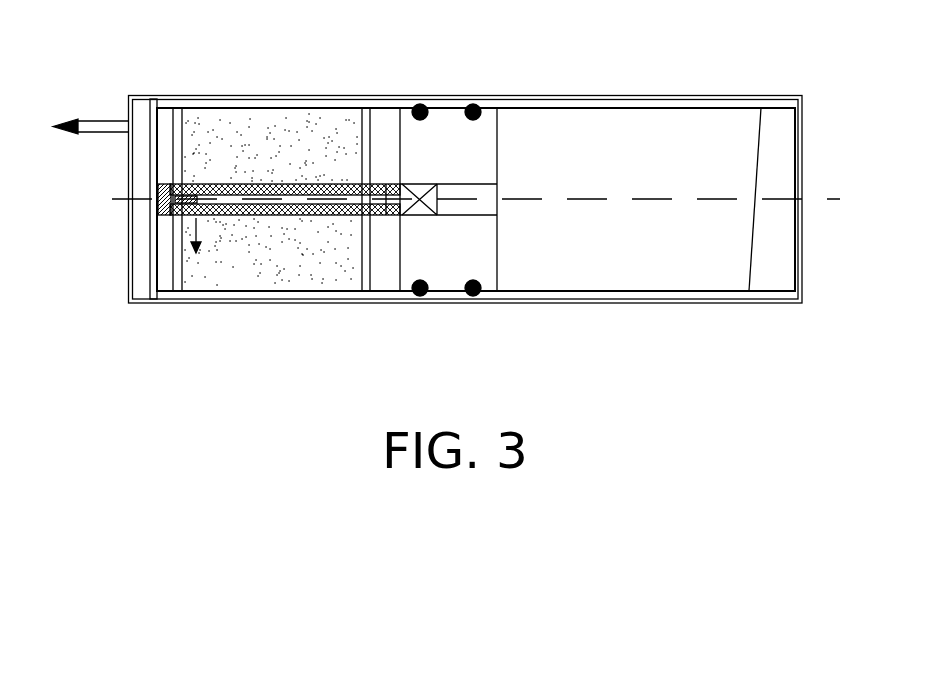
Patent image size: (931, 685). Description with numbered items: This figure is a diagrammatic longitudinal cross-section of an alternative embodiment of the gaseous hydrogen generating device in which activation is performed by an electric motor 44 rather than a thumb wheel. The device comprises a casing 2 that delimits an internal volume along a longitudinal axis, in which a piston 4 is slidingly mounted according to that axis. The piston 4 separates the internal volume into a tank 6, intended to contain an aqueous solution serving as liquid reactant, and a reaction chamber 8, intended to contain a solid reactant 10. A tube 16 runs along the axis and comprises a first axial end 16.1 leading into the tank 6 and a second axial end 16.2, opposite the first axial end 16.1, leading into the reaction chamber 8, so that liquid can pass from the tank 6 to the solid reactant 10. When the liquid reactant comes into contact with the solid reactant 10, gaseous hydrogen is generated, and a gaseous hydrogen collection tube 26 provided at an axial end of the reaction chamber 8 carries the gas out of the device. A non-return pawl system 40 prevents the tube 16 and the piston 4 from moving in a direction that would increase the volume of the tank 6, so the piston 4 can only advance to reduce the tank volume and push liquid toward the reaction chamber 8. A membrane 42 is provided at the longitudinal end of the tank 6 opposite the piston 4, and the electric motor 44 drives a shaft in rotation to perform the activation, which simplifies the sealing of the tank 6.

The casing 2 is at (669, 95).
The piston 4 is at (448, 112).
The tank 6 is at (548, 112).
The reaction chamber 8 is at (166, 110).
The solid reactant 10 is at (232, 270).
The tube 16 is at (287, 183).
The first axial end 16.1 is at (391, 216).
The second axial end 16.2 is at (160, 195).
The gaseous hydrogen collection tube 26 is at (100, 119).
The non-return pawl system 40 is at (176, 249).
The membrane 42 is at (748, 252).
The electric motor 44 is at (422, 214).